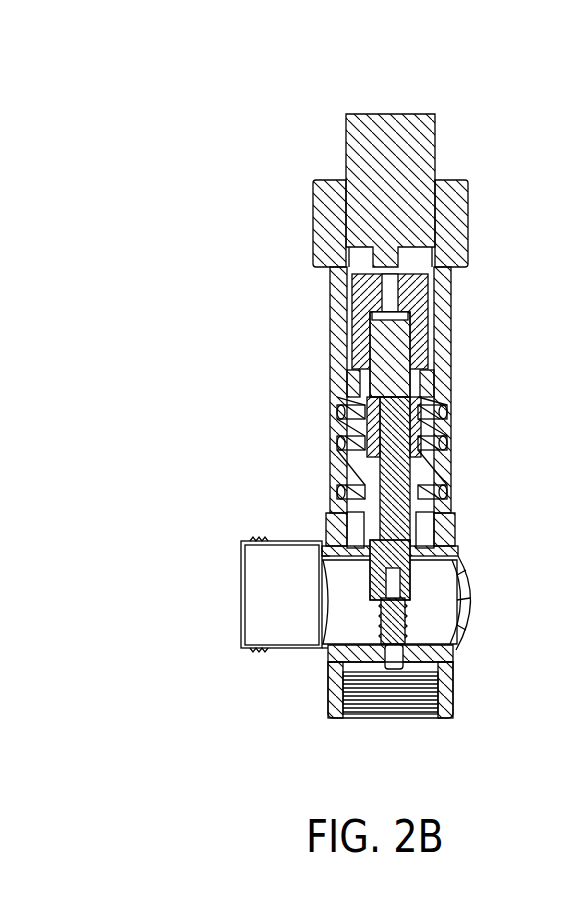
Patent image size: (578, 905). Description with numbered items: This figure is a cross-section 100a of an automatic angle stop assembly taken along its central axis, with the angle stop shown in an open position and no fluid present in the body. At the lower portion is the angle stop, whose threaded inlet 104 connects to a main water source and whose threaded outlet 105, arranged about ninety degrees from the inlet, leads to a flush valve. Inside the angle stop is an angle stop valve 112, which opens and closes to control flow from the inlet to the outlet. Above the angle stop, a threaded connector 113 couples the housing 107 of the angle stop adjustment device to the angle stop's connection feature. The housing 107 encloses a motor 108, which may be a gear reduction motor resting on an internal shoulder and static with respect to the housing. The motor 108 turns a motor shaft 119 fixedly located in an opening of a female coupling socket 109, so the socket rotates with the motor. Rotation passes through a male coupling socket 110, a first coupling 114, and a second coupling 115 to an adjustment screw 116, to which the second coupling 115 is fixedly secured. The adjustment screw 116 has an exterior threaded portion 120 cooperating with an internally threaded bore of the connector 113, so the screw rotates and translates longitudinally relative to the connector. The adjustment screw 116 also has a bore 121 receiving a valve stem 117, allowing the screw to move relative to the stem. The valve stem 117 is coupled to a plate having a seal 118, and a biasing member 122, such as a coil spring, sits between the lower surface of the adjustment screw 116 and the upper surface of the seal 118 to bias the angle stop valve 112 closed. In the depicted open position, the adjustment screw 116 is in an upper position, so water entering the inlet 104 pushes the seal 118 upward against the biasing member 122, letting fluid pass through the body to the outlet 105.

The cross-section 100a is at (272, 122).
The inlet 104 is at (377, 718).
The outlet 105 is at (241, 580).
The housing 107 is at (456, 208).
The motor 108 is at (420, 130).
The female coupling socket 109 is at (358, 293).
The male coupling socket 110 is at (360, 350).
The angle stop valve 112 is at (338, 622).
The connector 113 is at (333, 518).
The first coupling 114 is at (438, 412).
The second coupling 115 is at (390, 468).
The adjustment screw 116 is at (420, 528).
The valve stem 117 is at (405, 604).
The seal 118 is at (438, 658).
The motor shaft 119 is at (392, 302).
The threaded portion 120 is at (433, 560).
The bore 121 is at (410, 578).
The biasing member 122 is at (338, 645).